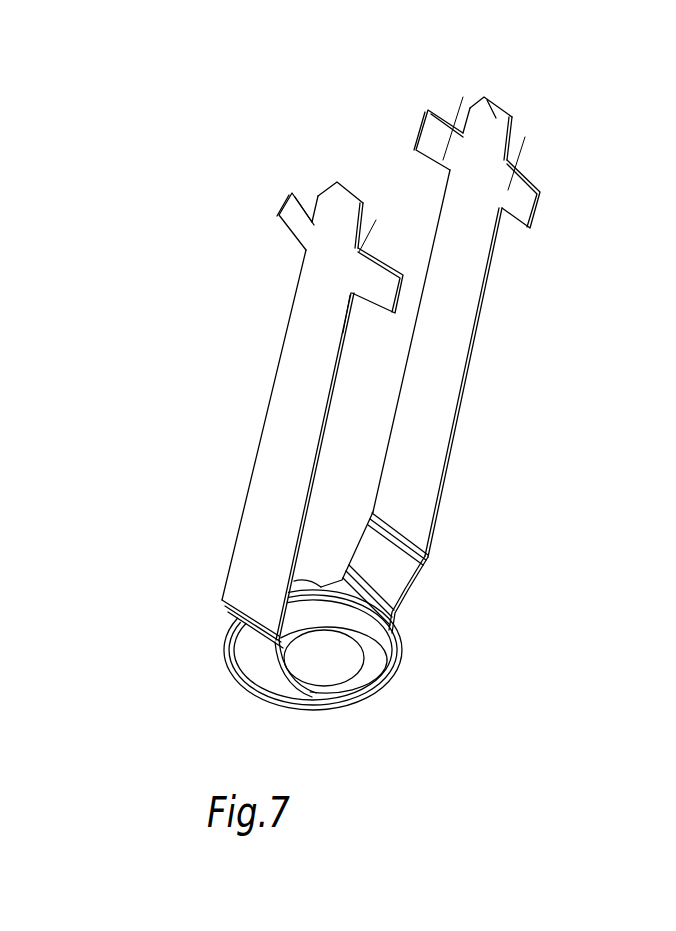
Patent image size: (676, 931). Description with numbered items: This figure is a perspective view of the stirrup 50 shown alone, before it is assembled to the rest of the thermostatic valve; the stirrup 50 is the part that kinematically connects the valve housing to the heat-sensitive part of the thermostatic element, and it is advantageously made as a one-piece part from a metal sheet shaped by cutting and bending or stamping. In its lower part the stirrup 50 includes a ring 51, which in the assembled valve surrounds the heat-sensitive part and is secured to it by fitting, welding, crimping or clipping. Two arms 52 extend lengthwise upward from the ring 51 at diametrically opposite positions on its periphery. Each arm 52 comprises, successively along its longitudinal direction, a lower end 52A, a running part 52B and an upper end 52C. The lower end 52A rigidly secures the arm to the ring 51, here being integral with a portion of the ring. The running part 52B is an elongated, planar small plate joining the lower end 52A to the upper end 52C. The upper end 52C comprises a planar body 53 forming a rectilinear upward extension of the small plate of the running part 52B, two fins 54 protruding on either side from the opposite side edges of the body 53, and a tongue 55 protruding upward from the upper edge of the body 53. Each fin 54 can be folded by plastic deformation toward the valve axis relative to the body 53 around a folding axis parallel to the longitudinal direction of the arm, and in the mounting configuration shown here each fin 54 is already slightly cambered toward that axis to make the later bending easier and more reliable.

The stirrup 50 is at (272, 698).
The ring 51 is at (378, 668).
The arm 52 is at (163, 681).
The lower end 52A is at (263, 646).
The running part 52B is at (287, 412).
The upper end 52C is at (222, 136).
The body 53 is at (330, 262).
The fin 54 is at (290, 217).
The tongue 55 is at (340, 200).